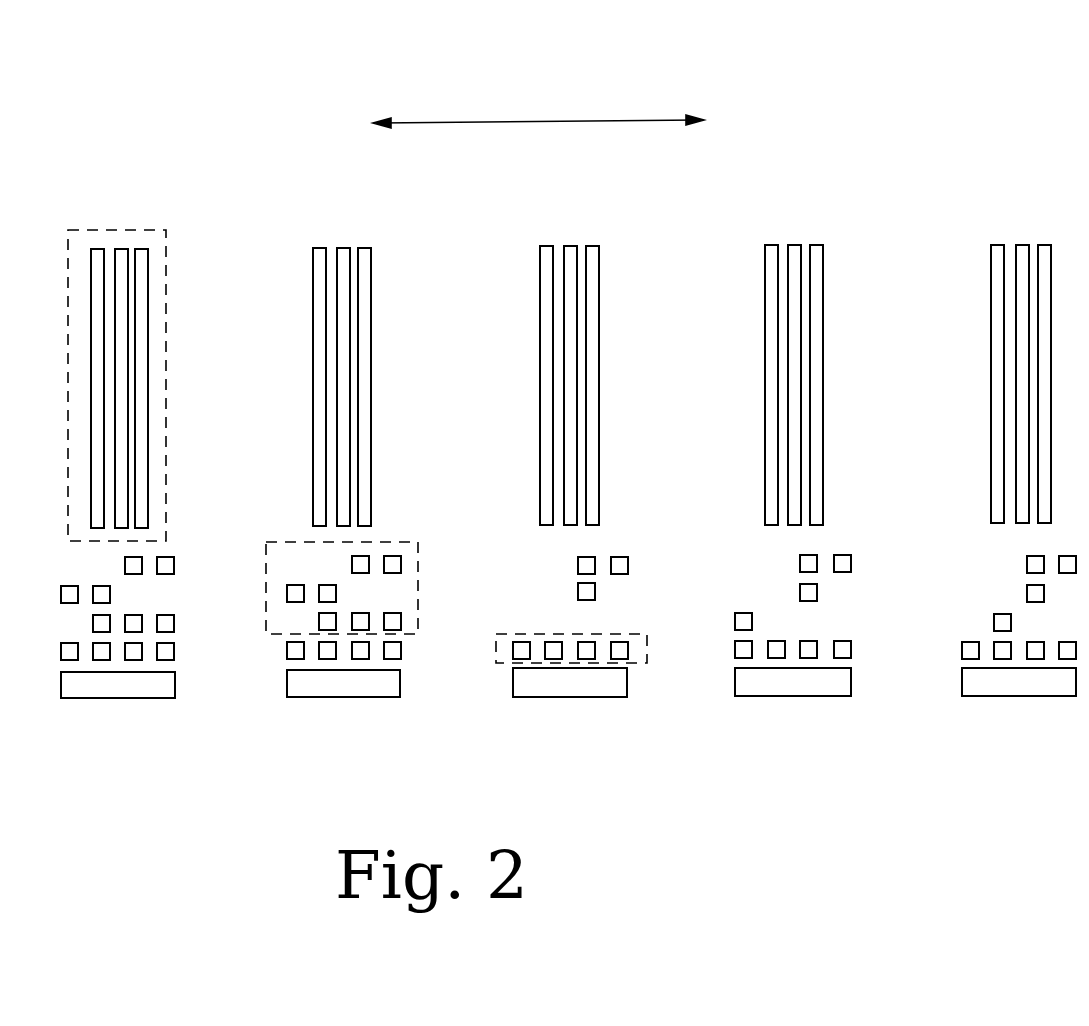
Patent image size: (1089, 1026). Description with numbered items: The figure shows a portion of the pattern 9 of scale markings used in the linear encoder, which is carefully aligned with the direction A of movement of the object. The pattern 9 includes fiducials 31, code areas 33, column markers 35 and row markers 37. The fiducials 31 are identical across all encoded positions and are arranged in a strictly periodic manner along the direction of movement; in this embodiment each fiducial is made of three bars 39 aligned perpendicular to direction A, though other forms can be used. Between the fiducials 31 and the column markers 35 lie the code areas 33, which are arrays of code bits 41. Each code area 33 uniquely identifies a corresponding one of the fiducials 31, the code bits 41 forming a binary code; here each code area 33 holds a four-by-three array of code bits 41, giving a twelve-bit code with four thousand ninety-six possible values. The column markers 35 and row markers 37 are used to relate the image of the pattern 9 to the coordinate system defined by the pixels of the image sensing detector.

The pattern 9 is at (832, 147).
The fiducials 31 is at (87, 230).
The bars 39 is at (313, 275).
The code areas 33 is at (405, 542).
The code bits 41 is at (619, 557).
The column markers 35 is at (600, 697).
The row markers 37 is at (768, 696).